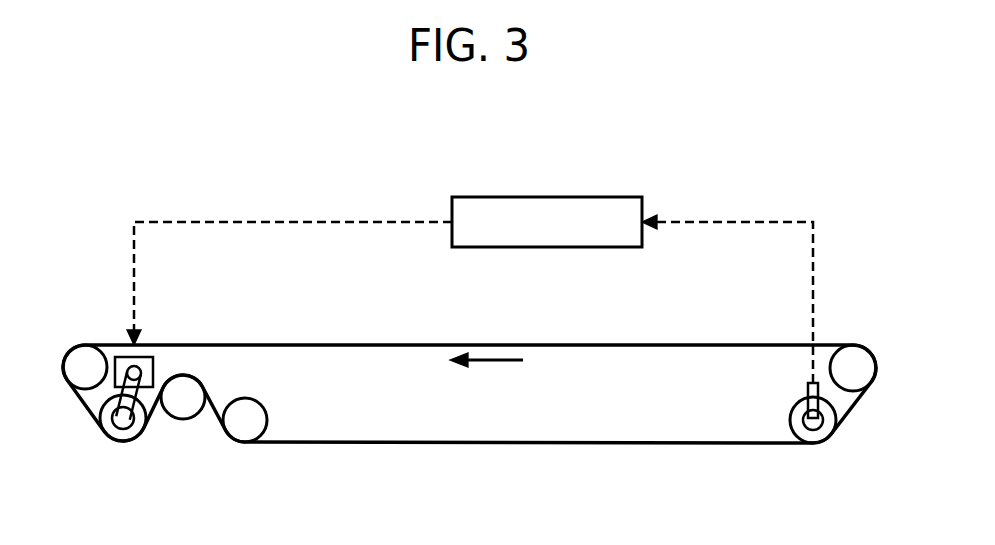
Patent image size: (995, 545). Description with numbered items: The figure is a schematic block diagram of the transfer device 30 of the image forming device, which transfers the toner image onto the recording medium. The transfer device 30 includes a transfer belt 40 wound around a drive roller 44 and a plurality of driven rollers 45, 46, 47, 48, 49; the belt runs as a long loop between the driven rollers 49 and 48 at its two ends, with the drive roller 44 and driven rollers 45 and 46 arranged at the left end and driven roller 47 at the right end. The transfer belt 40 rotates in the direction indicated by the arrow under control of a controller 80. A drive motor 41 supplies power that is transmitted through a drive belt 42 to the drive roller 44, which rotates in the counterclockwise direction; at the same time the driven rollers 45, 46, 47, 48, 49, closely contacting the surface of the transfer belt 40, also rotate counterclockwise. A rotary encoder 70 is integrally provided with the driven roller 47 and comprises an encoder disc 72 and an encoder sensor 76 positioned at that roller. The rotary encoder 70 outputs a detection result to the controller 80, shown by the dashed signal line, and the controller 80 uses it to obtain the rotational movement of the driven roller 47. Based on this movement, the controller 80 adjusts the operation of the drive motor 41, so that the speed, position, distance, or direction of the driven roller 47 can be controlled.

The transfer device 30 is at (357, 333).
The transfer belt 40 is at (393, 445).
The drive motor 41 is at (141, 370).
The drive belt 42 is at (151, 404).
The drive roller 44 is at (121, 437).
The driven roller 45 is at (192, 381).
The driven roller 46 is at (244, 436).
The driven roller 47 is at (794, 427).
The driven roller 48 is at (853, 354).
The driven roller 49 is at (84, 353).
The rotary encoder 70 is at (797, 449).
The encoder disc 72 is at (811, 431).
The encoder sensor 76 is at (807, 390).
The controller 80 is at (604, 197).